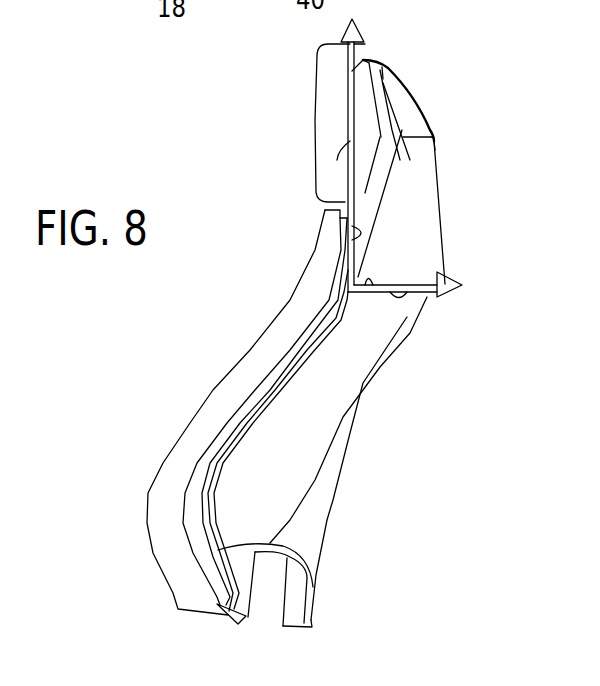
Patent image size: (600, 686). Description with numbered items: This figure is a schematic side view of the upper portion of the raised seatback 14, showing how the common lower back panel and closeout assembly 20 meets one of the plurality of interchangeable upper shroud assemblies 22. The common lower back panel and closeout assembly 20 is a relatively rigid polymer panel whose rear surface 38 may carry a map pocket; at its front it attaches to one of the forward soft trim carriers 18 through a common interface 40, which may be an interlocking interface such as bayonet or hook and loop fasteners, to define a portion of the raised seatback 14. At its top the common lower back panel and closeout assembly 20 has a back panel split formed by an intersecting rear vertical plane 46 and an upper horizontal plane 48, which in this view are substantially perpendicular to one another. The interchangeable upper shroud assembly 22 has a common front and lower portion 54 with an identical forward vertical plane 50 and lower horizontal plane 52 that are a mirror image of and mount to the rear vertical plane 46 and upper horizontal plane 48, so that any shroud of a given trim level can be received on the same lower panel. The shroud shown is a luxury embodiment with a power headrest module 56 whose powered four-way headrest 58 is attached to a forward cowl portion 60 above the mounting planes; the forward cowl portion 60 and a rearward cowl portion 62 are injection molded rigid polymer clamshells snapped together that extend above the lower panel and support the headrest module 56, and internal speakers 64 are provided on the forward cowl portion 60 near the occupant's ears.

The raised seatback 14 is at (224, 311).
The forward soft trim carrier 18 is at (210, 420).
The common lower back panel and closeout assembly 20 is at (317, 417).
The interchangeable upper shroud assembly 22 is at (413, 192).
The rear surface 38 is at (340, 470).
The common interface 40 is at (313, 344).
The rear vertical plane 46 is at (352, 222).
The upper horizontal plane 48 is at (433, 275).
The forward vertical plane 50 is at (362, 156).
The lower horizontal plane 52 is at (370, 287).
The common front and lower portion 54 is at (350, 258).
The power headrest module 56 is at (394, 92).
The powered four-way headrest 58 is at (316, 112).
The forward cowl portion 60 is at (366, 62).
The rearward cowl portion 62 is at (435, 152).
The internal speakers 64 is at (350, 141).